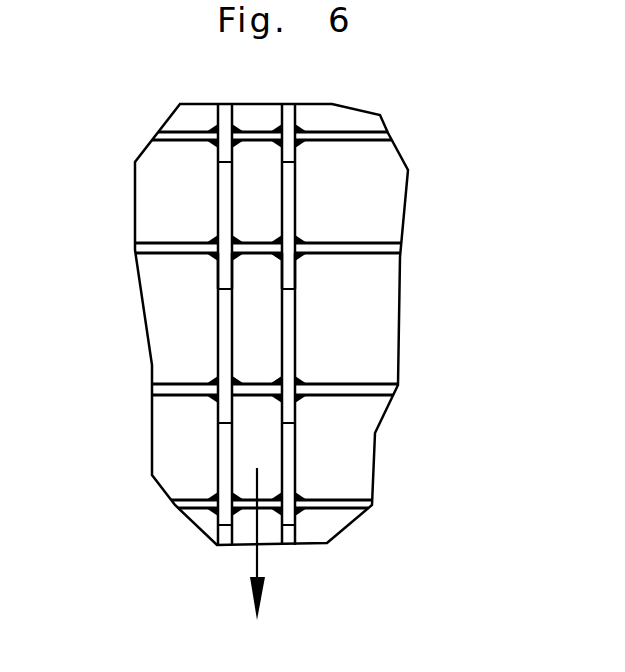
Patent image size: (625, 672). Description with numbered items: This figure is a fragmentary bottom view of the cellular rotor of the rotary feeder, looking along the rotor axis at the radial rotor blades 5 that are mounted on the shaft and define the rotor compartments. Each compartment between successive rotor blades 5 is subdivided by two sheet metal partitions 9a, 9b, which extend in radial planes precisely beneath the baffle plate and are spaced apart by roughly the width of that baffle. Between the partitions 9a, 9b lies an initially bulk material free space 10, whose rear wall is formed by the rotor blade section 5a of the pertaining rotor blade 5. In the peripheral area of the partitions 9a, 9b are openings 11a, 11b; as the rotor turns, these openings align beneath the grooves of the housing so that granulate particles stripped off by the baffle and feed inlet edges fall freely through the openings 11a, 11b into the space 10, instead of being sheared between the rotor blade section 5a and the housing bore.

The rotor blade 5 is at (168, 250).
The rotor blade section 5a is at (257, 247).
The partition 9a is at (224, 329).
The partition 9b is at (293, 340).
The bulk material free space 10 is at (275, 345).
The opening 11a is at (224, 272).
The opening 11b is at (289, 280).